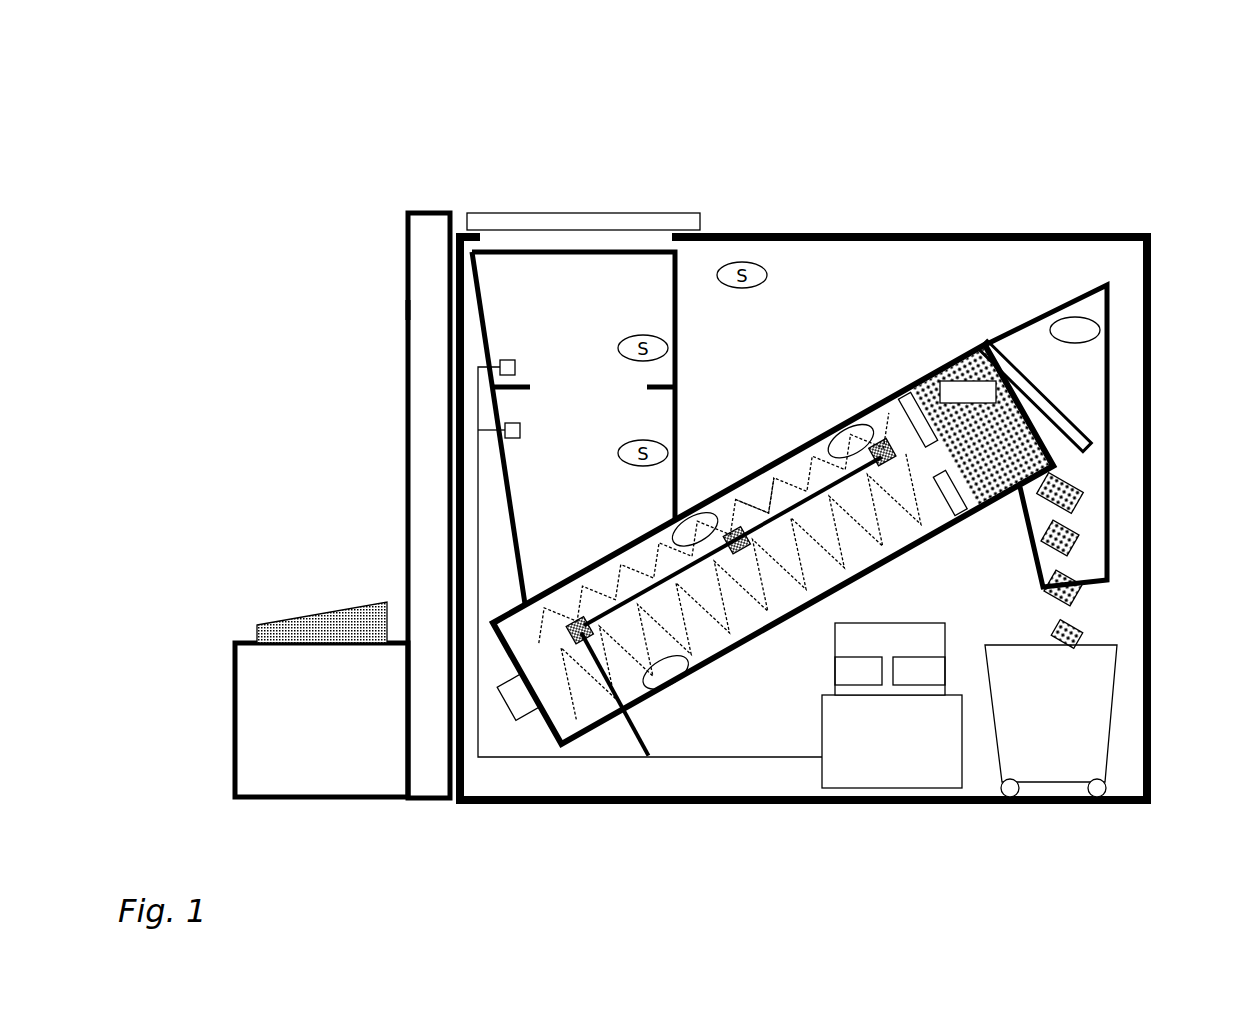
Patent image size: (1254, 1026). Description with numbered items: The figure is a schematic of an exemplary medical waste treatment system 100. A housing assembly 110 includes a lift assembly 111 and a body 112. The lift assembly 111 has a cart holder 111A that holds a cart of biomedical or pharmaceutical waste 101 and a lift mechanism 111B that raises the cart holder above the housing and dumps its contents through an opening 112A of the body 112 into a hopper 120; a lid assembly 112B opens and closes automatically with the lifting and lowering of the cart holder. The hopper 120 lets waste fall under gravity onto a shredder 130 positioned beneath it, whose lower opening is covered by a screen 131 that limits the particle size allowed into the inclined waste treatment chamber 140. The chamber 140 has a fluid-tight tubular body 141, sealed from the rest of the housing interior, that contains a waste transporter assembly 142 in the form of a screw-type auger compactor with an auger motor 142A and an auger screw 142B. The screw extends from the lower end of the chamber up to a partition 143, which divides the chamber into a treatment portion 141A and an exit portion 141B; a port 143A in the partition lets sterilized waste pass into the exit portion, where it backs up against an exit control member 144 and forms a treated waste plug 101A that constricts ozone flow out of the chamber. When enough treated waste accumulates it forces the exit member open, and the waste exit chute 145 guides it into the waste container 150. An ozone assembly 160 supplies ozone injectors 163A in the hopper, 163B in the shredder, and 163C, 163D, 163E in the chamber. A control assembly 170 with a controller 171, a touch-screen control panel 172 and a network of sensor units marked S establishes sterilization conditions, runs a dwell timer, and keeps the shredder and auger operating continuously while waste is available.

The waste treatment system 100 is at (372, 60).
The waste 101 is at (310, 615).
The treated waste plug 101A is at (1010, 453).
The housing assembly 110 is at (803, 457).
The lift assembly 111 is at (404, 212).
The cart holder 111A is at (243, 705).
The lift mechanism 111B is at (406, 305).
The body 112 is at (855, 237).
The opening 112A is at (508, 245).
The lid assembly 112B is at (655, 213).
The hopper 120 is at (573, 428).
The shredder 130 is at (584, 456).
The screen 131 is at (590, 588).
The inclined waste treatment chamber 140 is at (795, 443).
The body 141 is at (862, 424).
The treatment portion 141A is at (733, 541).
The exit portion 141B is at (968, 391).
The waste transporter assembly 142 is at (580, 715).
The auger motor 142A is at (515, 705).
The auger screw 142B is at (752, 510).
The partition 143 is at (905, 410).
The port 143A is at (930, 440).
The exit control member 144 is at (1015, 370).
The waste exit chute 145 is at (1108, 425).
The waste container 150 is at (1103, 672).
The ozone assembly 160 is at (910, 784).
The ozone injector 163A is at (500, 365).
The ozone injector 163B is at (505, 430).
The ozone injector 163C is at (592, 637).
The ozone injector 163D is at (748, 552).
The ozone injector 163E is at (887, 462).
The control assembly 170 is at (913, 633).
The controller 171 is at (858, 671).
The touch-screen control panel 172 is at (919, 671).